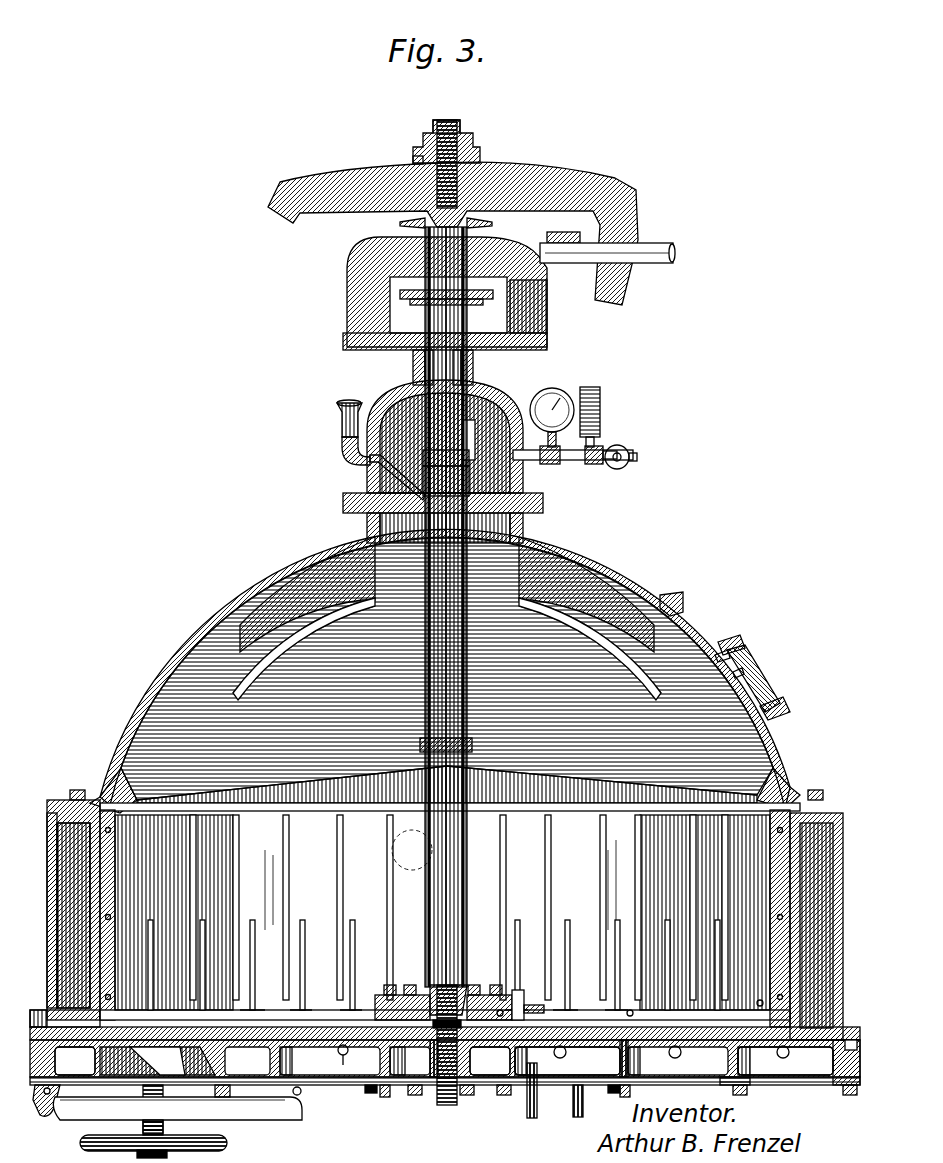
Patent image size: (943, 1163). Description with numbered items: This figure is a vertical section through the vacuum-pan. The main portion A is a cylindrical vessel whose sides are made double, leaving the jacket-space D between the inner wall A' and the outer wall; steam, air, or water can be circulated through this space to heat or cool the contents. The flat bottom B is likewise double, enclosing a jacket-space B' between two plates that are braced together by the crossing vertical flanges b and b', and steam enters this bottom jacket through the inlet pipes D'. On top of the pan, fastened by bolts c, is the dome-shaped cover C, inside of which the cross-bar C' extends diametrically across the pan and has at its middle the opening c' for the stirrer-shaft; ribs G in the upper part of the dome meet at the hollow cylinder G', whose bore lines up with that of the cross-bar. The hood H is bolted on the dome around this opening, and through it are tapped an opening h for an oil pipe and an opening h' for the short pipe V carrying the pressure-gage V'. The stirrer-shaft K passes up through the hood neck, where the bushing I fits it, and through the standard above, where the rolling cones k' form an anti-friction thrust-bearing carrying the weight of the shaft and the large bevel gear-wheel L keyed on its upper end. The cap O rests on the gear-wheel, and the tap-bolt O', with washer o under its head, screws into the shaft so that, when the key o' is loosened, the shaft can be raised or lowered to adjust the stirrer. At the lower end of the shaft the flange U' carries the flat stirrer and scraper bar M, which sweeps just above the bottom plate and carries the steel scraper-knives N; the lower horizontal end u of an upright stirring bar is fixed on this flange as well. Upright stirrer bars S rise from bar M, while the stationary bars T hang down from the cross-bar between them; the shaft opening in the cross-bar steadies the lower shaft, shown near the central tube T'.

The bevel gear-wheel L is at (453, 228).
The cap O is at (451, 141).
The washer o is at (455, 164).
The tap-bolt O' is at (455, 119).
The key o' is at (411, 154).
The cones k' is at (444, 222).
The bushing I is at (448, 305).
The stirrer-shaft K is at (462, 290).
The hood H is at (523, 479).
The ribs G is at (447, 582).
The hollow cylinder G' is at (447, 634).
The dome-shaped cover C is at (445, 671).
The vent fitting v is at (672, 595).
The shaft opening c' is at (730, 684).
The cross-bar C' is at (447, 784).
The bolts c is at (446, 785).
The tapped opening h' is at (573, 449).
The pressure-gage V' is at (552, 406).
The short pipe V is at (594, 463).
The tapped opening h is at (388, 465).
The main portion of apparatus A is at (445, 907).
The jacket-space D is at (60, 915).
The inner wall A' is at (445, 915).
The scraper-knives N is at (770, 870).
The stirrer and scraper bar M is at (115, 925).
The stationary bars T is at (459, 907).
The central tube T' is at (409, 907).
The upright stirrer bars S is at (434, 965).
The lower horizontal end u is at (500, 985).
The flange U' is at (532, 1003).
The bottom B is at (445, 1062).
The vertical flanges b is at (498, 1057).
The bottom jacket-space B' is at (567, 1061).
The vertical flanges b' is at (529, 1058).
The steam-inlet pipes D' is at (521, 1092).